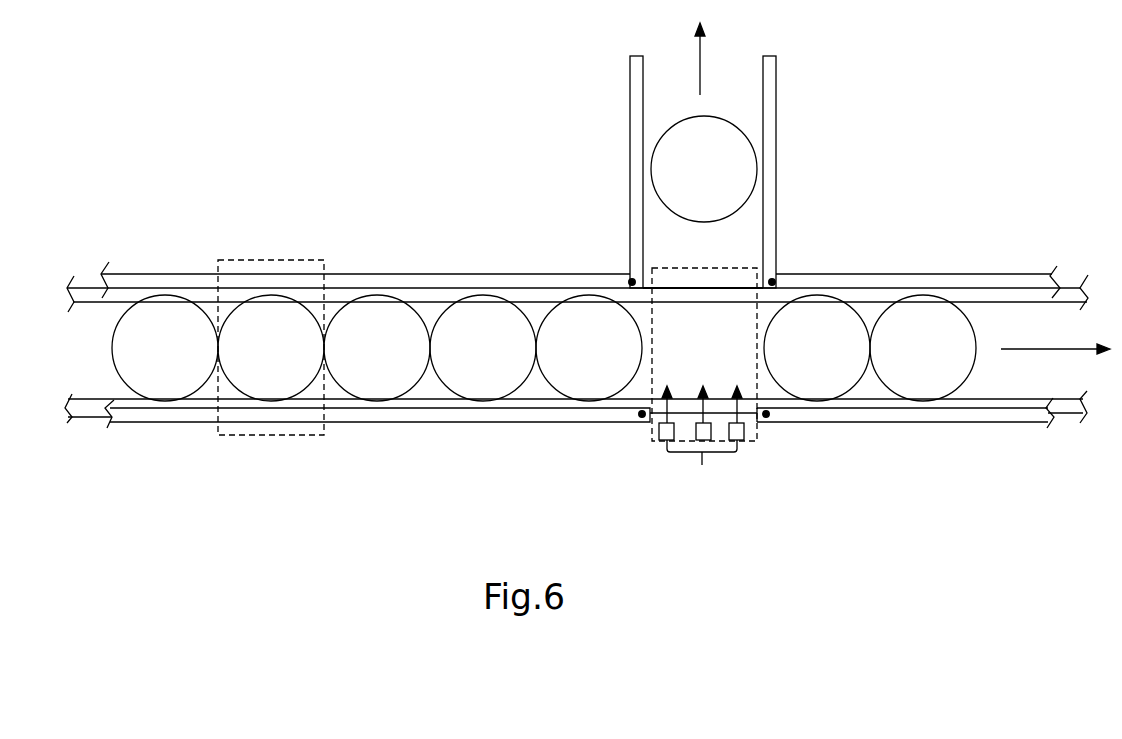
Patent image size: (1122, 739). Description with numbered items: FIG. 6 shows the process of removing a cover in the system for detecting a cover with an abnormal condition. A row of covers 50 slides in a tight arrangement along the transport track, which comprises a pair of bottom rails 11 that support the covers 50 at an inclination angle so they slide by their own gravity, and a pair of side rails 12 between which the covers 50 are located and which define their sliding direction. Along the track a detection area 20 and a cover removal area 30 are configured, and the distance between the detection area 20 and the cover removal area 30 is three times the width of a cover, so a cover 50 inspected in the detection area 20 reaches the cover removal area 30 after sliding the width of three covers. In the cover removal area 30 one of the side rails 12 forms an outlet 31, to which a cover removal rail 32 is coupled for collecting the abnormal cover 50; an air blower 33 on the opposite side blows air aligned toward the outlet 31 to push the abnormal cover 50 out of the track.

The bottom rails 11 is at (83, 290).
The side rails 12 is at (177, 283).
The detection area 20 is at (309, 259).
The cover removal area 30 is at (738, 268).
The outlet 31 is at (683, 287).
The cover removal rail 32 is at (772, 112).
The air blower 33 is at (701, 443).
The cover 50 is at (127, 349).